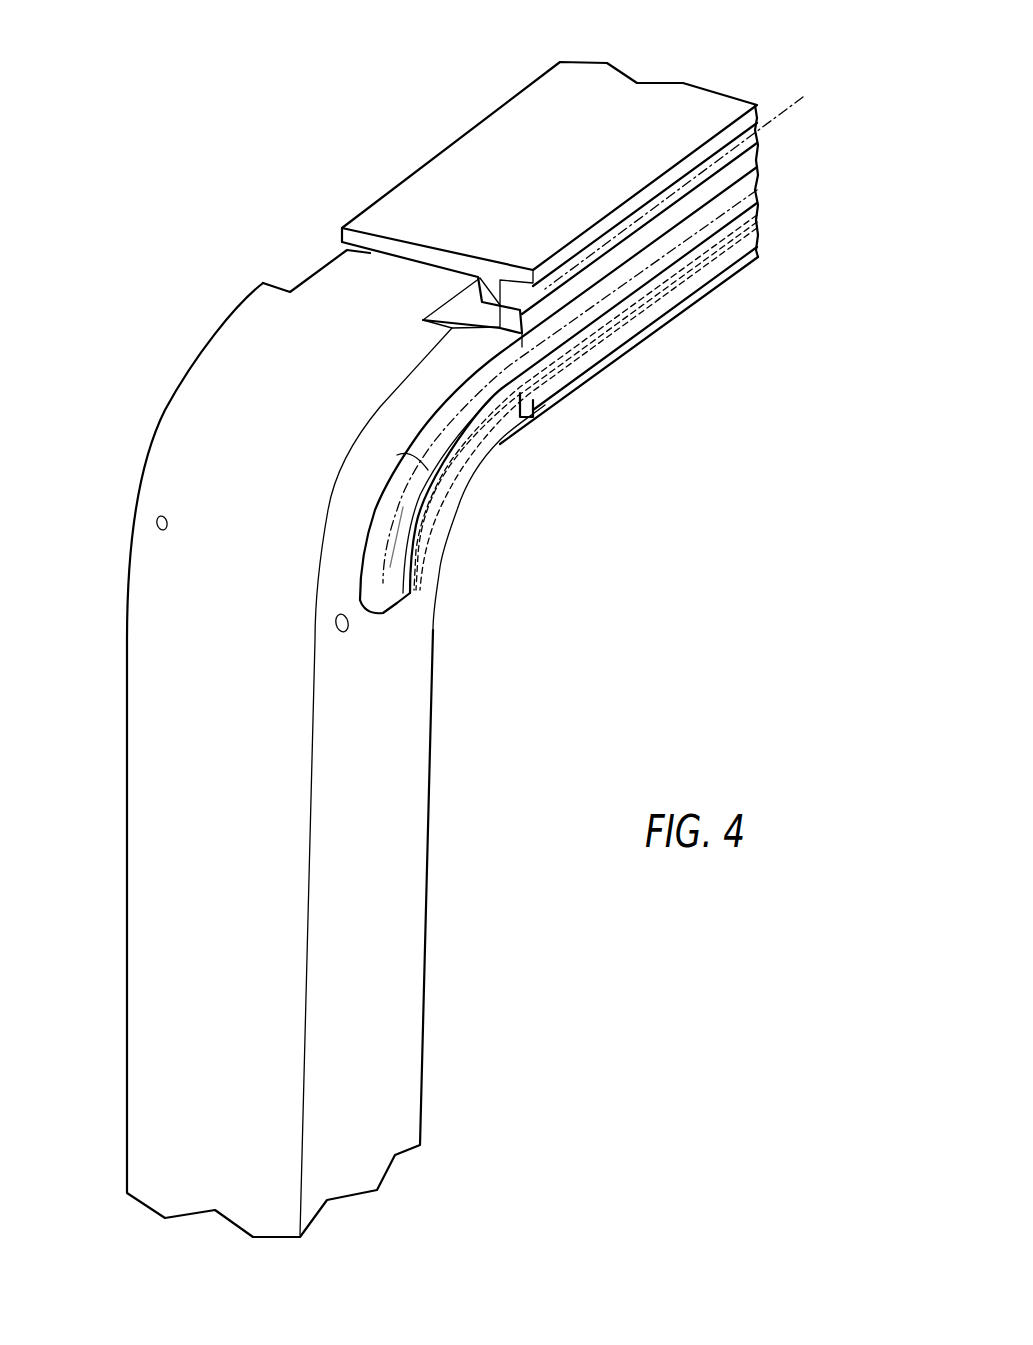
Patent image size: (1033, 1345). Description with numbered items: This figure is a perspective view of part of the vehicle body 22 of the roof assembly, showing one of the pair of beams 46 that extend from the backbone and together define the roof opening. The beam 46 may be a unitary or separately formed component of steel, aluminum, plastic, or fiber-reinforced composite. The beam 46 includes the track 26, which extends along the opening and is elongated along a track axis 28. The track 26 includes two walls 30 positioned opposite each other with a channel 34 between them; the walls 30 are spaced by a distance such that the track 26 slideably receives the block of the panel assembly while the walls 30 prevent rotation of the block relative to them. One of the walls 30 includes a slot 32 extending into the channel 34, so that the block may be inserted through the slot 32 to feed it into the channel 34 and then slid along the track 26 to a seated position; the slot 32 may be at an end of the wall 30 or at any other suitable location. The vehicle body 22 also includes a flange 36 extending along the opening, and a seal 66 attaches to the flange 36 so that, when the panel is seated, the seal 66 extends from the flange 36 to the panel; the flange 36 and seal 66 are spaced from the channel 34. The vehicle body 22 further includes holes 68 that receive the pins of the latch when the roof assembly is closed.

The vehicle body 22 is at (170, 210).
The track 26 is at (688, 145).
The track axis 28 is at (788, 107).
The walls 30 is at (543, 275).
The slot 32 is at (500, 327).
The channel 34 is at (497, 283).
The flange 36 is at (408, 490).
The beams 46 is at (127, 968).
The seal 66 is at (395, 468).
The holes 68 is at (158, 520).